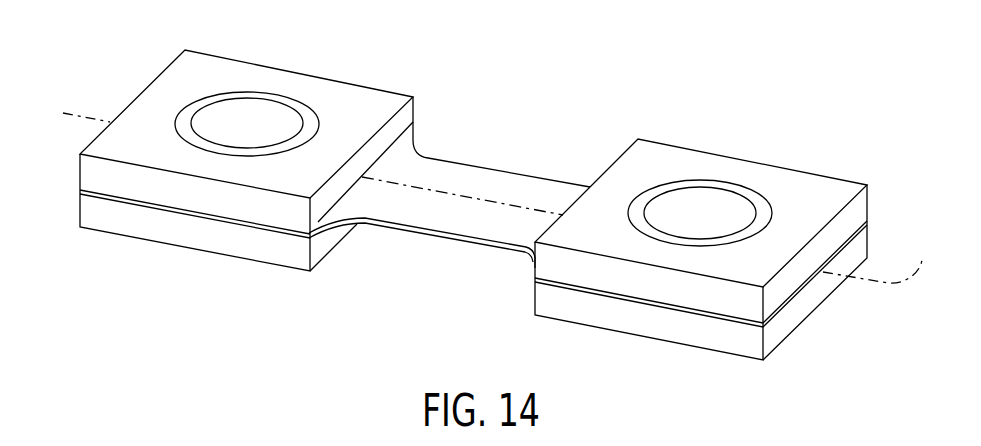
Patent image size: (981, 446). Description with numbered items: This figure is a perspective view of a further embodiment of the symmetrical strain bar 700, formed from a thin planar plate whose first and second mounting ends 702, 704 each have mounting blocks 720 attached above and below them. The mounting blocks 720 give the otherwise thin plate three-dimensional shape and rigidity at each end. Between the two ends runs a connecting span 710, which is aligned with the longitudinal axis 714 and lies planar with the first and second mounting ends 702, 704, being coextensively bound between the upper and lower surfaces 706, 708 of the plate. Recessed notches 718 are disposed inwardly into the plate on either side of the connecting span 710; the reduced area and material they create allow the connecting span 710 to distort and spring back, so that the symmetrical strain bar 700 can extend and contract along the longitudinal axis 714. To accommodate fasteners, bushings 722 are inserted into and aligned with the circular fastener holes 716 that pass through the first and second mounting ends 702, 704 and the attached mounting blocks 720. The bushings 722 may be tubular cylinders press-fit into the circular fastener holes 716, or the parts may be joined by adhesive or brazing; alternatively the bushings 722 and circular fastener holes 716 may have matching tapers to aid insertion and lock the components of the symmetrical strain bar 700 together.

The symmetrical strain bar 700 is at (475, 207).
The first mounting end 702 is at (80, 190).
The second mounting end 704 is at (863, 228).
The upper surface 706 is at (430, 175).
The lower surface 708 is at (368, 227).
The connecting span 710 is at (485, 180).
The longitudinal axis 714 is at (657, 125).
The circular fastener hole 716 is at (263, 135).
The recessed notch 718 is at (449, 206).
The mounting block 720 is at (168, 95).
The bushing 722 is at (308, 118).